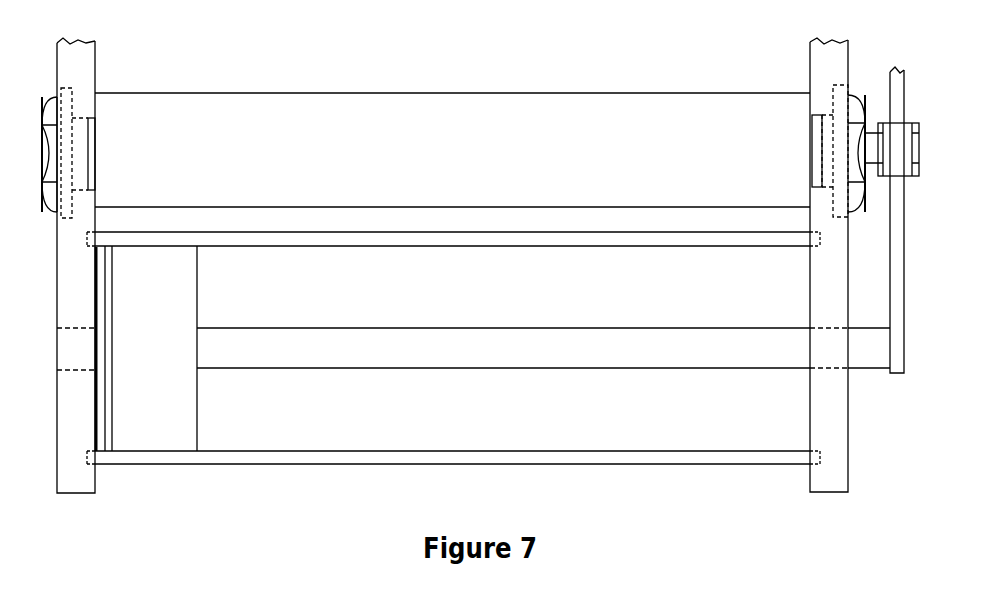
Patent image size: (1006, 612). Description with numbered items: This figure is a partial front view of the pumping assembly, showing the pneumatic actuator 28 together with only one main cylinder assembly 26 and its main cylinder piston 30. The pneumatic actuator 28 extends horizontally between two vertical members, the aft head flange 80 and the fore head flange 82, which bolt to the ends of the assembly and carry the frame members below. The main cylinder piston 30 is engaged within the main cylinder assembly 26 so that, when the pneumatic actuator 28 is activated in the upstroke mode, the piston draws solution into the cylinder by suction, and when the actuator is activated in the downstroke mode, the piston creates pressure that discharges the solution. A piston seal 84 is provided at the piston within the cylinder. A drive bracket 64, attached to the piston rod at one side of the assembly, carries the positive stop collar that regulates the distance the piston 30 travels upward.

The main cylinder assembly 26 is at (578, 455).
The pneumatic actuator 28 is at (521, 110).
The main cylinder piston 30 is at (178, 298).
The drive bracket 64 is at (904, 223).
The aft head flange 80 is at (848, 59).
The fore head flange 82 is at (95, 76).
The piston seal 84 is at (113, 438).